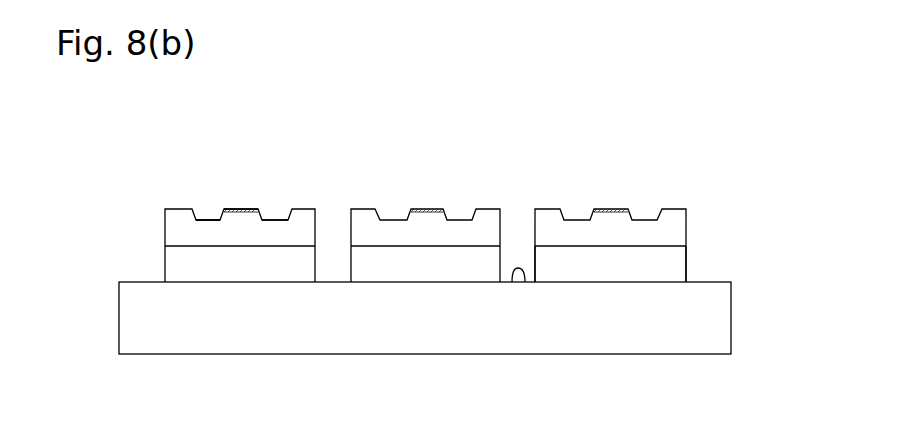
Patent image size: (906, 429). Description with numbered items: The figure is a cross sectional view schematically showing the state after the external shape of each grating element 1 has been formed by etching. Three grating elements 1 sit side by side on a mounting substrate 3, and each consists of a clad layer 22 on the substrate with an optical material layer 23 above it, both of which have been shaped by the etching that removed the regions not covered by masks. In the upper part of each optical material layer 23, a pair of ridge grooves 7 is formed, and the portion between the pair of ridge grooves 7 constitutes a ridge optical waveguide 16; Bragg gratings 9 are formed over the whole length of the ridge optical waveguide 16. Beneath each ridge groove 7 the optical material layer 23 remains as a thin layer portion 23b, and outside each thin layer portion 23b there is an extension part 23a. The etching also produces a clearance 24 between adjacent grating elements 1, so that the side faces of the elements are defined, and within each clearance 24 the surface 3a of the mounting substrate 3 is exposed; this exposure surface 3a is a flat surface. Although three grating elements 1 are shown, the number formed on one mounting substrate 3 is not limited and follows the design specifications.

The grating element 1 is at (692, 202).
The mounting substrate 3 is at (713, 320).
The surface of the mounting substrate 3a is at (523, 271).
The ridge groove 7 is at (207, 218).
The Bragg grating 9 is at (242, 213).
The ridge optical waveguide 16 is at (423, 220).
The clad layer 22 is at (677, 263).
The optical material layer 23 is at (677, 230).
The extension part 23a is at (180, 208).
The thin layer portion 23b is at (203, 225).
The clearance 24 is at (331, 205).